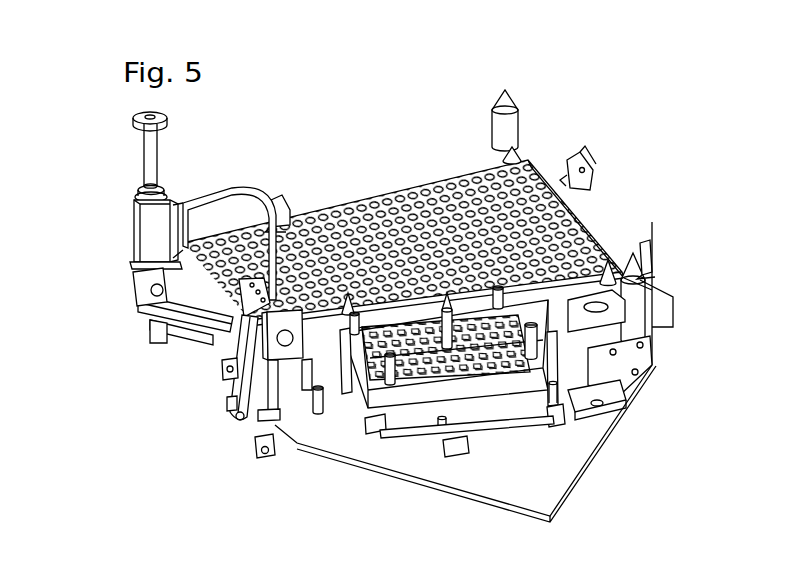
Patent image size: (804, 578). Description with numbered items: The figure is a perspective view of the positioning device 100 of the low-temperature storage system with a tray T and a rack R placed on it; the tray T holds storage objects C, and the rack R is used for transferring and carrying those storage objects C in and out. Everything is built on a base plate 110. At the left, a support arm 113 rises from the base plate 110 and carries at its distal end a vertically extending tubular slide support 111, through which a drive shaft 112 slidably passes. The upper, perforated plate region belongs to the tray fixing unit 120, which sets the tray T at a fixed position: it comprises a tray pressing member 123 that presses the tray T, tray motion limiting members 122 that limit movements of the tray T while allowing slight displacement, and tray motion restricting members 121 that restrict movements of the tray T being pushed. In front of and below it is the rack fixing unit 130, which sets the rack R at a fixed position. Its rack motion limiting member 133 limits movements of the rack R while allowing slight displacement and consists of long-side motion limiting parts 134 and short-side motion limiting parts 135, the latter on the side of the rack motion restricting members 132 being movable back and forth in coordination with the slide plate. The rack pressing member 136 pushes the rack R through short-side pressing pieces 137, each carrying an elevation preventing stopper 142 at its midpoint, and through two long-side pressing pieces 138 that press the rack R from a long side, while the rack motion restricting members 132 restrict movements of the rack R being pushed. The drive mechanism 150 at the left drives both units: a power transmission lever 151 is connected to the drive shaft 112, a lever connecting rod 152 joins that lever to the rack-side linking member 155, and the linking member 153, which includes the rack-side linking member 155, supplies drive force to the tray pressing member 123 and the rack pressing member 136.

The positioning device 100 is at (80, 94).
The base plate 110 is at (663, 310).
The slide support 111 is at (153, 225).
The drive shaft 112 is at (157, 146).
The support arm 113 is at (213, 222).
The tray fixing unit 120 is at (677, 189).
The tray motion restricting members 121 is at (273, 205).
The tray motion limiting members 122 is at (503, 130).
The tray pressing member 123 is at (650, 240).
The rack fixing unit 130 is at (655, 462).
The rack motion restricting members 132 is at (610, 412).
The rack motion limiting member 133 is at (447, 306).
The long-side motion limiting parts 134 is at (442, 432).
The short-side motion limiting parts 135 is at (460, 185).
The rack pressing member 136 is at (519, 432).
The short-side pressing pieces 137 is at (375, 430).
The long-side pressing pieces 138 is at (460, 448).
The elevation preventing stopper 142 is at (387, 185).
The drive mechanism 150 is at (190, 468).
The power transmission lever 151 is at (217, 330).
The lever connecting rod 152 is at (240, 418).
The linking member 153 is at (225, 461).
The rack-side linking member 155 is at (268, 450).
The tray T is at (323, 222).
The storage objects C is at (240, 358).
The rack R is at (655, 357).